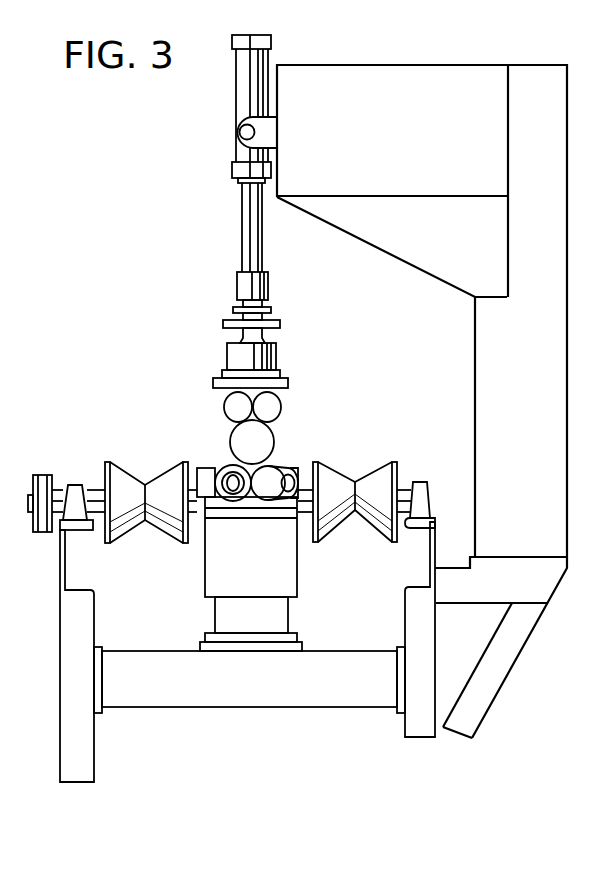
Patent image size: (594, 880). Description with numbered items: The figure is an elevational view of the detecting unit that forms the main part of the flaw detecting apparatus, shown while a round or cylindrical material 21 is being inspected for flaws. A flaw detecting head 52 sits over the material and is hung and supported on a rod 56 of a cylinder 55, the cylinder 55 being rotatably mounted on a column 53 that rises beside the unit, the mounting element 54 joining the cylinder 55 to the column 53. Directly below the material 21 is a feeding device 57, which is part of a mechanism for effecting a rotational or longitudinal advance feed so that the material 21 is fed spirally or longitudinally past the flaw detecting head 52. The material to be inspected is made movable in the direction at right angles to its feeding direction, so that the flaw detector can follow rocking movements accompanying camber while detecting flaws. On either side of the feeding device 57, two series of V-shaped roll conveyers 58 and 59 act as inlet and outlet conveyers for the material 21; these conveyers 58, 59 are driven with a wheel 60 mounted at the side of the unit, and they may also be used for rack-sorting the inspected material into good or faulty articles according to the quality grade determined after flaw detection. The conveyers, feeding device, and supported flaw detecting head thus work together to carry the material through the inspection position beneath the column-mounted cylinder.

The round or cylindrical material 21 is at (242, 442).
The flaw detecting head 52 is at (257, 358).
The column 53 is at (343, 180).
The pivot bracket 54 is at (240, 132).
The cylinder 55 is at (247, 78).
The rod 56 is at (250, 215).
The feeding device 57 is at (275, 472).
The V-shaped roll conveyer 58 is at (130, 515).
The V-shaped roll conveyer 59 is at (340, 512).
The wheel 60 is at (43, 483).